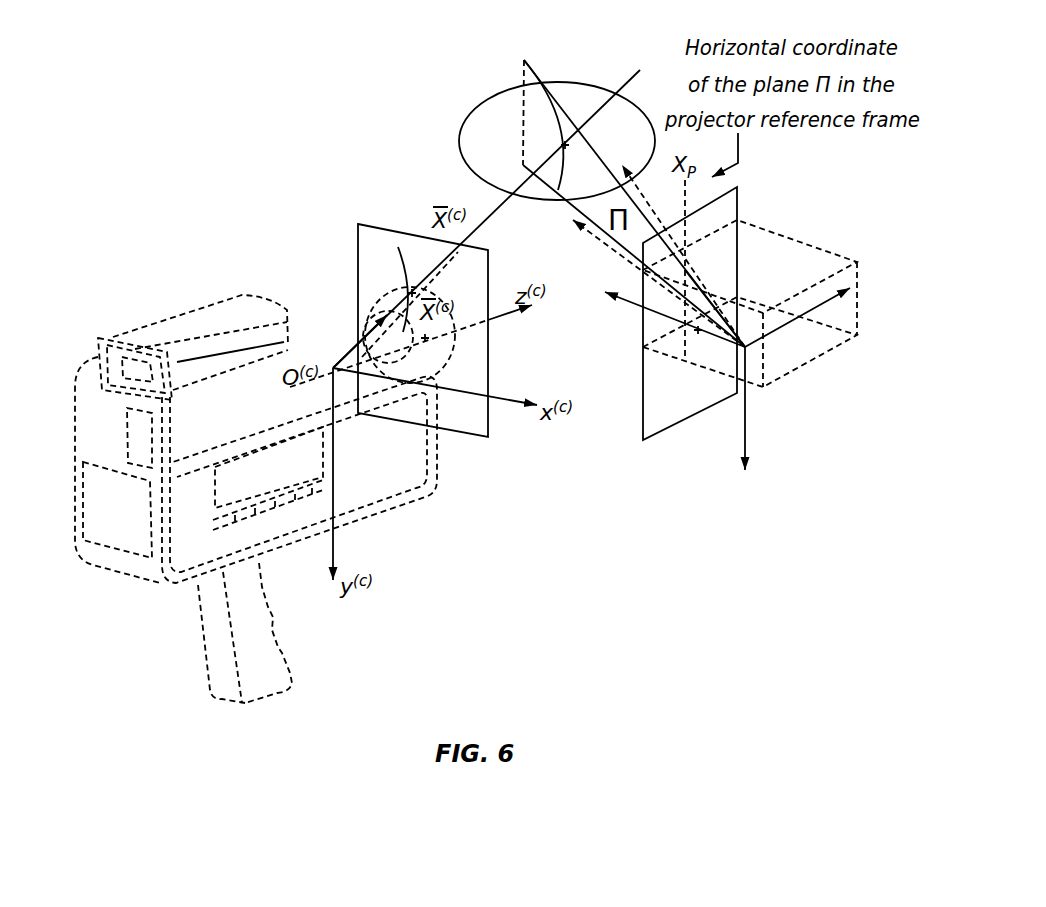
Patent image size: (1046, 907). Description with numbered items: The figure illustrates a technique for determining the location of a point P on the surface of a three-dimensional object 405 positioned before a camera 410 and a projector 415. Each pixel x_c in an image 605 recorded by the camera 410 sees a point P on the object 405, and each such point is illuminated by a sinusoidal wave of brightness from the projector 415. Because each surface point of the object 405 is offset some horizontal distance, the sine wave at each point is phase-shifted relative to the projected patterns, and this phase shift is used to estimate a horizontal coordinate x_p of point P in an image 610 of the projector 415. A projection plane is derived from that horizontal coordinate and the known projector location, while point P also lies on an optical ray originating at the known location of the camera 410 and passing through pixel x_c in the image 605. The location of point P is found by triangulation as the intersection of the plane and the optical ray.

The 3D object 405 is at (457, 140).
The camera 410 is at (332, 365).
The projector 415 is at (748, 356).
The image 605 is at (358, 253).
The image 610 is at (737, 208).